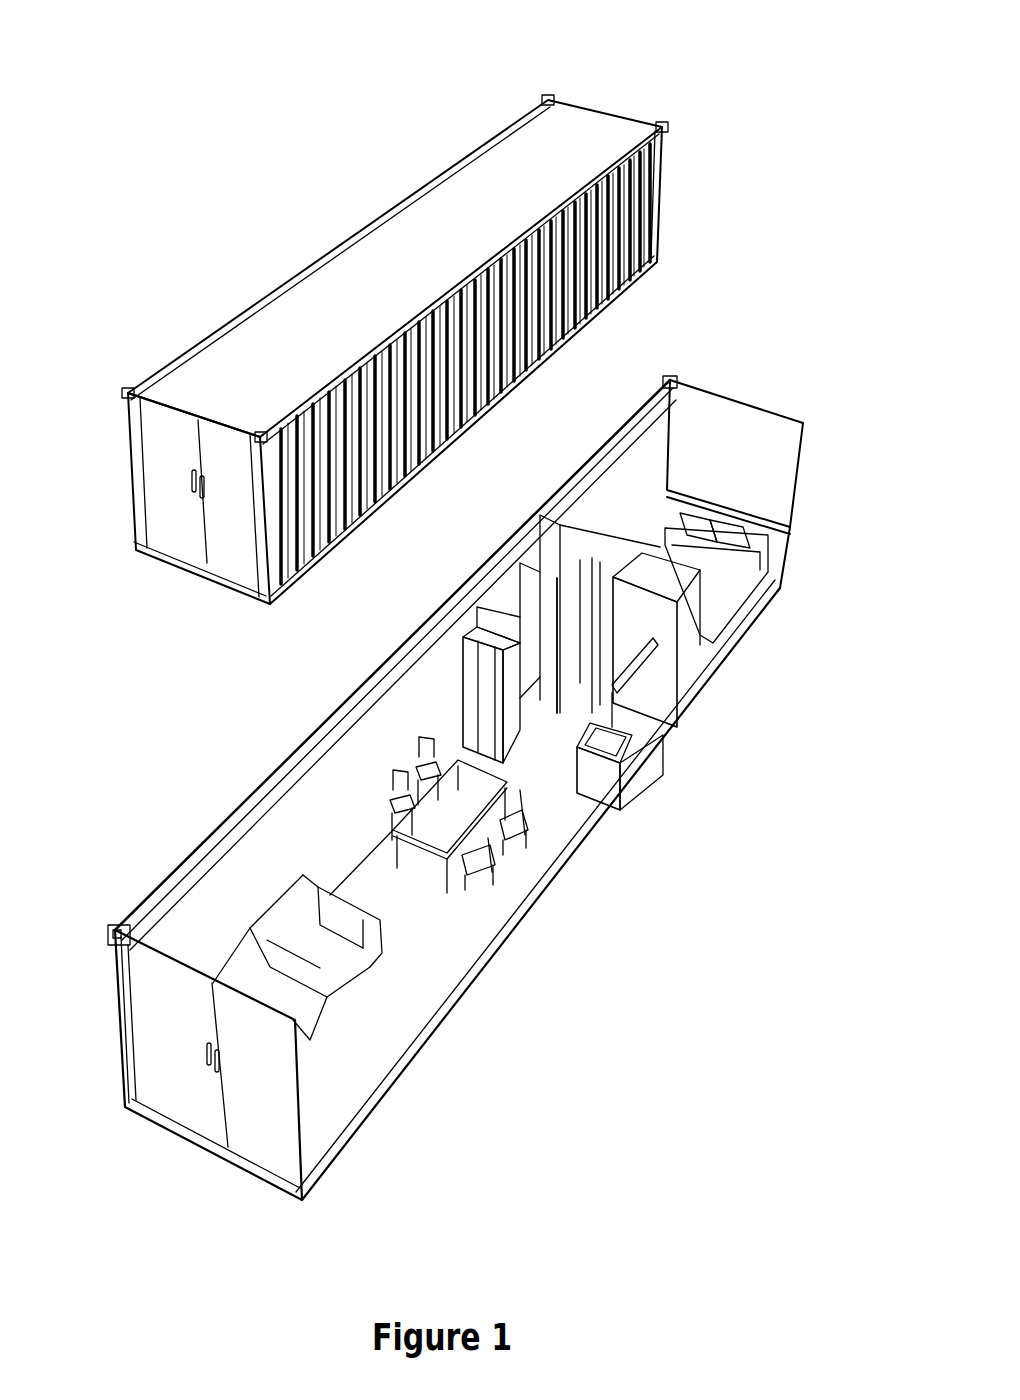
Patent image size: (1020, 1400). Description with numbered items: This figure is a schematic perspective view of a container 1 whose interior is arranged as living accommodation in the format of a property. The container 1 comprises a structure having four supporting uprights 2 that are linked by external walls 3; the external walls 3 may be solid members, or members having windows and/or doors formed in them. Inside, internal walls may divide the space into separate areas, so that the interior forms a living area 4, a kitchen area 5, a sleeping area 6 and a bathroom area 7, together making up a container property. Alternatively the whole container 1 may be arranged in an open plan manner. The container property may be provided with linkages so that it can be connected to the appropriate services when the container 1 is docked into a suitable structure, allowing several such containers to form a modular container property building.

The container 1 is at (214, 221).
The supporting uprights 2 is at (561, 99).
The external walls 3 is at (363, 457).
The living area 4 is at (367, 998).
The kitchen area 5 is at (627, 780).
The sleeping area 6 is at (717, 597).
The bathroom area 7 is at (533, 613).